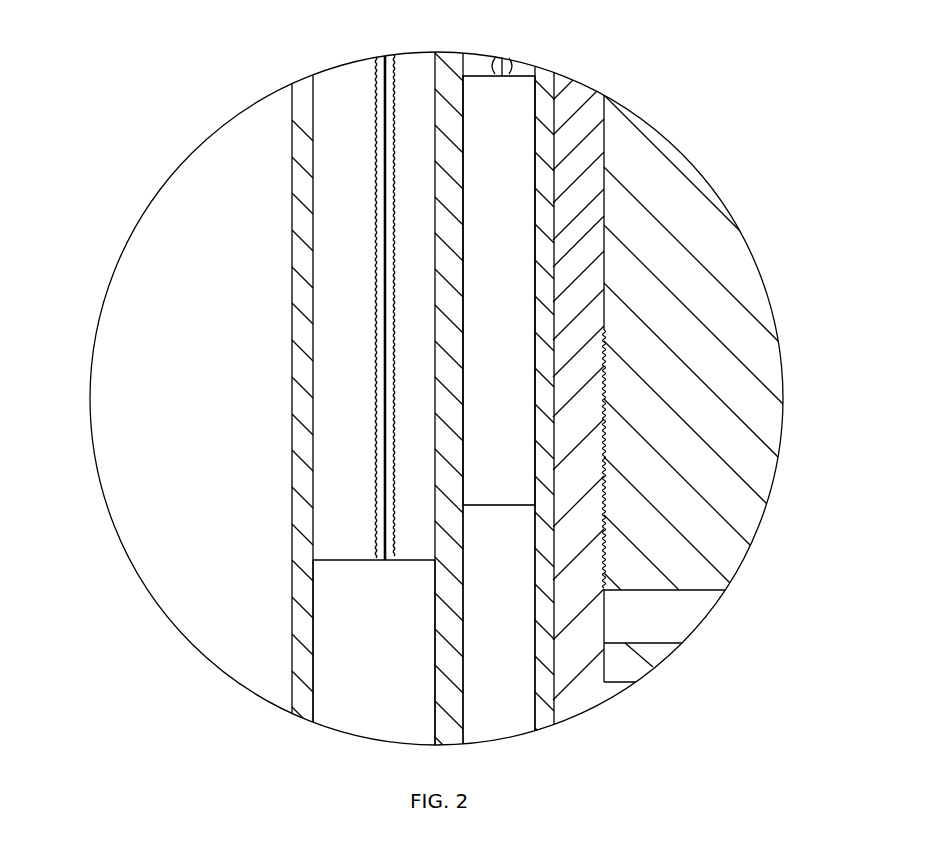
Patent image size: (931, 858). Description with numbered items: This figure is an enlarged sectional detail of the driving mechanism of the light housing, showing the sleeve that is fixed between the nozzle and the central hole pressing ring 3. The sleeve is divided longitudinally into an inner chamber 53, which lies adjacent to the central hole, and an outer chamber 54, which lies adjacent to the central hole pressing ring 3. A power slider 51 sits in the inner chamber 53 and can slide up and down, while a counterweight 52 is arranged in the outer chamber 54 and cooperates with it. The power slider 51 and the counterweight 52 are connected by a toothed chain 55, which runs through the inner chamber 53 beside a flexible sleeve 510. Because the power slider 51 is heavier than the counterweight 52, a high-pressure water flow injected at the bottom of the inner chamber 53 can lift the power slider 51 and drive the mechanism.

The central hole pressing ring 3 is at (580, 208).
The power slider 51 is at (352, 622).
The counterweight 52 is at (500, 375).
The inner chamber 53 is at (345, 418).
The outer chamber 54 is at (495, 592).
The toothed chain 55 is at (385, 296).
The flexible sleeve 510 is at (378, 182).